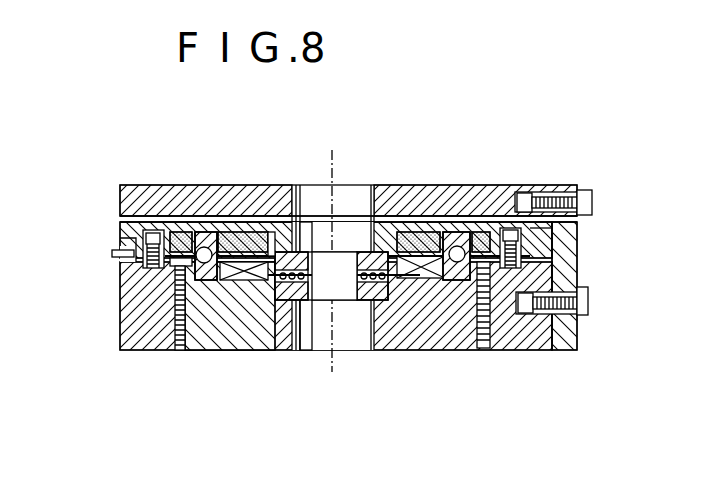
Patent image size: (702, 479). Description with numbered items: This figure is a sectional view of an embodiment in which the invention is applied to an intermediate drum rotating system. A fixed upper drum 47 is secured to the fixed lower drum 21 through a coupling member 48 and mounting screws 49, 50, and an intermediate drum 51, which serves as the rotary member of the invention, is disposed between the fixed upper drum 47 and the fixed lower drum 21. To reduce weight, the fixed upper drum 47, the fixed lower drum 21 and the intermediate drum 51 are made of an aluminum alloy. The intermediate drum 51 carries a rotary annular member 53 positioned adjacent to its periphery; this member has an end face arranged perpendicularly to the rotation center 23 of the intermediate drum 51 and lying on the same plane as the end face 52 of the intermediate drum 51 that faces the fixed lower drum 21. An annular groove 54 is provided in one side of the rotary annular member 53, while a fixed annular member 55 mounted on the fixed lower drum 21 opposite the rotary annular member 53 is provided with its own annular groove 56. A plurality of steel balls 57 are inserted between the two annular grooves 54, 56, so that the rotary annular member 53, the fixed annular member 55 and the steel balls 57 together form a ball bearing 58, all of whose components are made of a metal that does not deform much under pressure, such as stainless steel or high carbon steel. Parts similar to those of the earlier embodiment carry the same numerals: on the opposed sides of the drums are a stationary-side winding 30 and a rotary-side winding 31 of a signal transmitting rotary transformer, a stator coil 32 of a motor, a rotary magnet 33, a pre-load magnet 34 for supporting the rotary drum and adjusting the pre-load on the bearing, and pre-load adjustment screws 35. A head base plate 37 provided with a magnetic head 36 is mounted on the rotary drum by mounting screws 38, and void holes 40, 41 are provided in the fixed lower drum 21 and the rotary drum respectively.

The fixed lower drum 21 is at (382, 335).
The rotation center 23 is at (336, 200).
The stationary-side winding 30 is at (285, 303).
The rotary-side winding 31 is at (312, 205).
The stator coil 32 is at (420, 278).
The rotary magnet 33 is at (410, 232).
The pre-load magnet 34 is at (180, 226).
The pre-load adjustment screws 35 is at (175, 293).
The magnetic head 36 is at (121, 245).
The head base plate 37 is at (112, 254).
The mounting screws 38 is at (143, 280).
The void hole 40 is at (325, 330).
The void hole 41 is at (355, 240).
The fixed upper drum 47 is at (498, 200).
The coupling member 48 is at (558, 340).
The mounting screw 49 is at (586, 190).
The mounting screw 50 is at (590, 308).
The intermediate drum 51 is at (552, 228).
The end face 52 is at (268, 232).
The rotary annular member 53 is at (456, 245).
The annular groove 54 is at (200, 232).
The fixed annular member 55 is at (445, 312).
The annular groove 56 is at (192, 330).
The steel balls 57 is at (208, 246).
The ball bearing 58 is at (468, 292).